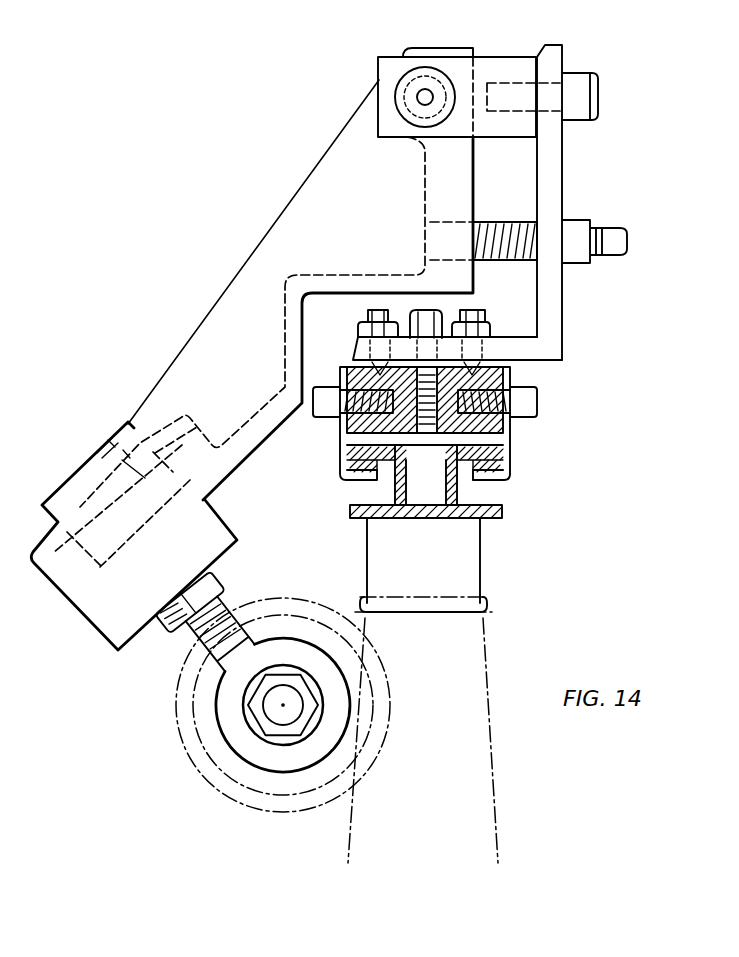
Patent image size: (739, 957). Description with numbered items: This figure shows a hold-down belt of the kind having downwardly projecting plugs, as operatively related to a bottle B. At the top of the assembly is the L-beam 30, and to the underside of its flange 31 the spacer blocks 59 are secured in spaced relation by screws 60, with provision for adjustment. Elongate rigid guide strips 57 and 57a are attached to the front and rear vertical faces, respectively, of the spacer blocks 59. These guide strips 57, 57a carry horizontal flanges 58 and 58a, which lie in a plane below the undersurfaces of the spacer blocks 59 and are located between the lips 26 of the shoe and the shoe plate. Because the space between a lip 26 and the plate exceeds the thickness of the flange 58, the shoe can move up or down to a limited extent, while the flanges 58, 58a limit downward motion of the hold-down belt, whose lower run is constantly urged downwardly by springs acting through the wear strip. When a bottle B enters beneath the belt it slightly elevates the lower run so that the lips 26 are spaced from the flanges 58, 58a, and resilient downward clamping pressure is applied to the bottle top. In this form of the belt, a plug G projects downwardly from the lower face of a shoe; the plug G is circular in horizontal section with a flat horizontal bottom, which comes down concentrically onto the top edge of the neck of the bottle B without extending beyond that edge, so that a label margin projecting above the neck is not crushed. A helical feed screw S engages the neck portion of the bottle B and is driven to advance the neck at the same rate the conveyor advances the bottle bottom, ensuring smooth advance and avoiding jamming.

The L-beam 30 is at (558, 188).
The flange 31 is at (503, 343).
The screws 60 is at (413, 310).
The spacer blocks 59 is at (492, 375).
The guide strip 57 is at (347, 433).
The guide strip 57a is at (513, 430).
The lips 26 is at (498, 458).
The horizontal flange 58 is at (368, 482).
The horizontal flange 58a is at (492, 487).
The plug G is at (480, 553).
The bottle B is at (475, 765).
The helical feed screw S is at (278, 793).